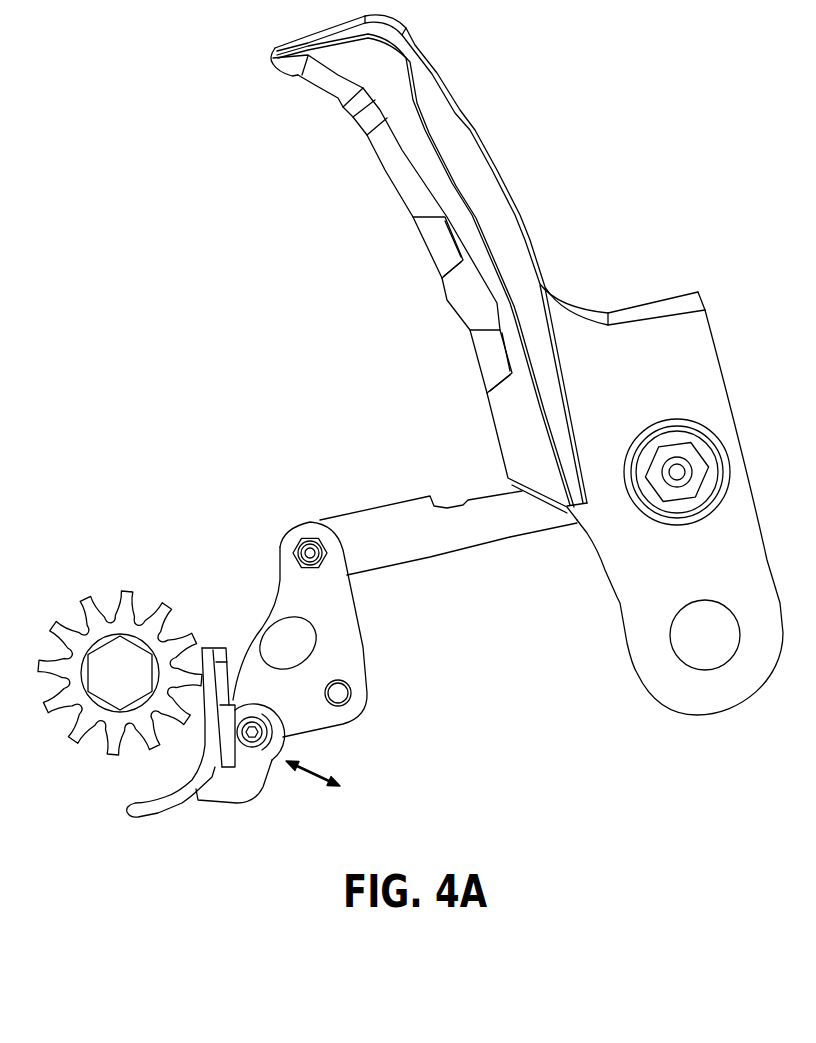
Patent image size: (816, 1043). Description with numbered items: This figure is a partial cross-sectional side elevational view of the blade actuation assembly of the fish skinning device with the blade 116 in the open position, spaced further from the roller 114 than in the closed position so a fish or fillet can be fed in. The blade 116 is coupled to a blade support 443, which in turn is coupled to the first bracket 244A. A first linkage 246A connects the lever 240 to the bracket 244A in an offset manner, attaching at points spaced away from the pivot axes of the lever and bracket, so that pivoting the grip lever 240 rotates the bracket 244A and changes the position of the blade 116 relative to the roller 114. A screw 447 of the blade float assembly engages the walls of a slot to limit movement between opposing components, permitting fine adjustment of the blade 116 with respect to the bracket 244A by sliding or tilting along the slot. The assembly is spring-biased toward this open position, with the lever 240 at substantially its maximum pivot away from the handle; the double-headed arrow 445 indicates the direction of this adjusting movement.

The lever 240 is at (457, 120).
The first linkage 246A is at (378, 513).
The first bracket 244A is at (280, 585).
The roller 114 is at (108, 592).
The blade support 443 is at (217, 645).
The screw 447 is at (250, 717).
The pawl motion direction 445 is at (283, 735).
The blade 116 is at (168, 808).